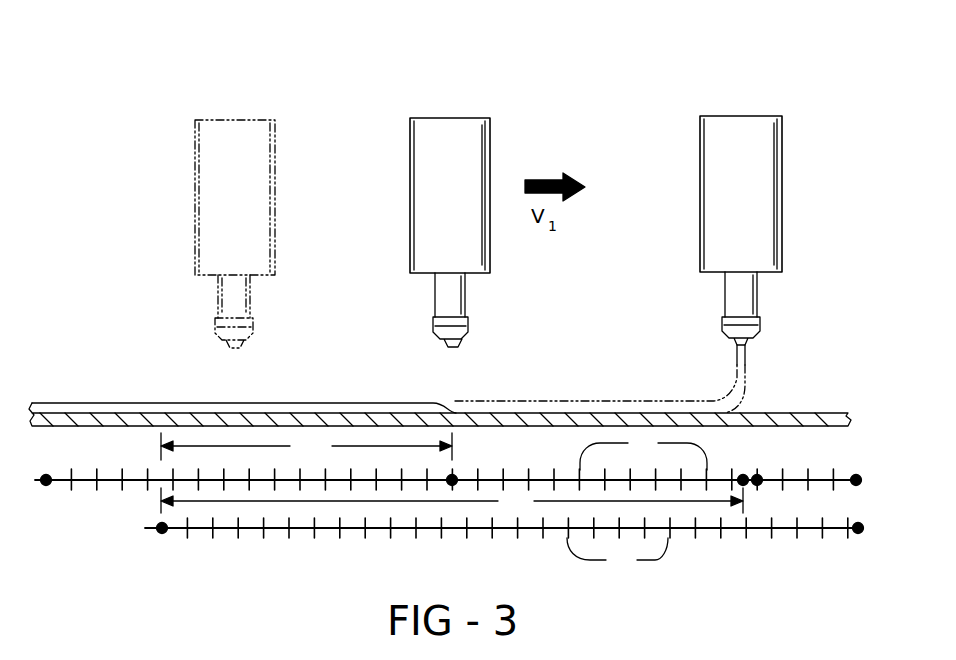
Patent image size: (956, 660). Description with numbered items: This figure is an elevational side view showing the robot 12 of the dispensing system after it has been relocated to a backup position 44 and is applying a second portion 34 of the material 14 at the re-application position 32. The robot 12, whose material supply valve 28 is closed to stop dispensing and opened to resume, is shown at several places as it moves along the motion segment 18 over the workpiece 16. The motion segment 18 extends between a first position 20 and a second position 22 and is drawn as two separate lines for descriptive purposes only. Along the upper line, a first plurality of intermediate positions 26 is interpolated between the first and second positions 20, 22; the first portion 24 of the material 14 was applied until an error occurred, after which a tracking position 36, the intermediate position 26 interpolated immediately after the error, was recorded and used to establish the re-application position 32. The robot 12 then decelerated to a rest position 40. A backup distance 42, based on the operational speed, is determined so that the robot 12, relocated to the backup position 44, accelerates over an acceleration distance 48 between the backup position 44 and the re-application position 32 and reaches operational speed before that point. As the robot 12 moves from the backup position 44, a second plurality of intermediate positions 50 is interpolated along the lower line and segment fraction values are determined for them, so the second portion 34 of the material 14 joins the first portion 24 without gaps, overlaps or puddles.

The robot 12 is at (240, 120).
The material 14 is at (440, 339).
The workpiece 16 is at (78, 413).
The motion segment 18 is at (353, 548).
The first position 20 is at (48, 487).
The second position 22 is at (856, 475).
The first portion 24 is at (179, 403).
The intermediate positions 26 is at (643, 450).
The material supply valve 28 is at (236, 350).
The re-application position 32 is at (456, 475).
The second portion 34 is at (650, 400).
The tracking position 36 is at (758, 468).
The rest position 40 is at (747, 483).
The backup distance 42 is at (452, 500).
The backup position 44 is at (162, 530).
The acceleration distance 48 is at (306, 446).
The second plurality of intermediate positions 50 is at (617, 555).